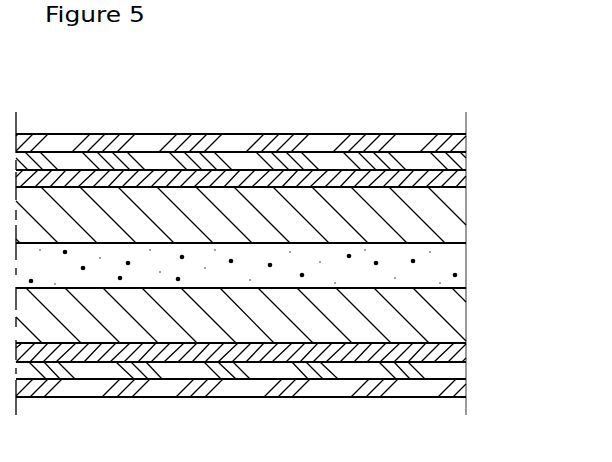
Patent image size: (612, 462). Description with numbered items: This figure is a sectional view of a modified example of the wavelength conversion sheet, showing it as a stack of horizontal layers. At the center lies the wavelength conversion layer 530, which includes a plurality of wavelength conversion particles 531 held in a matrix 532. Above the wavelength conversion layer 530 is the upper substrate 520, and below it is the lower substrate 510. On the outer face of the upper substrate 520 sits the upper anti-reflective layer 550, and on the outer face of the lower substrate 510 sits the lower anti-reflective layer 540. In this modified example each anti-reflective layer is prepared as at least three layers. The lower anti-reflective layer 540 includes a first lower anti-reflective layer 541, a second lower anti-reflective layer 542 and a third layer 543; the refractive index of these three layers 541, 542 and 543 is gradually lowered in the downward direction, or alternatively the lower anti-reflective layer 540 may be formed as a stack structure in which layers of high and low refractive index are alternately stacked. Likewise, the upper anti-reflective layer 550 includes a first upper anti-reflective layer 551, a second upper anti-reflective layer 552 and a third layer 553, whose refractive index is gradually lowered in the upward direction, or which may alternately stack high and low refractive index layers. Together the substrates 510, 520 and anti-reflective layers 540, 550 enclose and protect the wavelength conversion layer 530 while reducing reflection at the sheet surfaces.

The lower substrate 510 is at (455, 315).
The upper substrate 520 is at (458, 215).
The wavelength conversion layer 530 is at (296, 267).
The wavelength conversion particles 531 is at (455, 275).
The matrix 532 is at (455, 257).
The lower anti-reflective layer 540 is at (296, 372).
The first lower anti-reflective layer 541 is at (458, 355).
The second lower anti-reflective layer 542 is at (455, 372).
The third lower anti-reflective layer 543 is at (273, 393).
The upper anti-reflective layer 550 is at (296, 160).
The first upper anti-reflective layer 551 is at (460, 177).
The second upper anti-reflective layer 552 is at (462, 163).
The third upper anti-reflective layer 553 is at (462, 143).